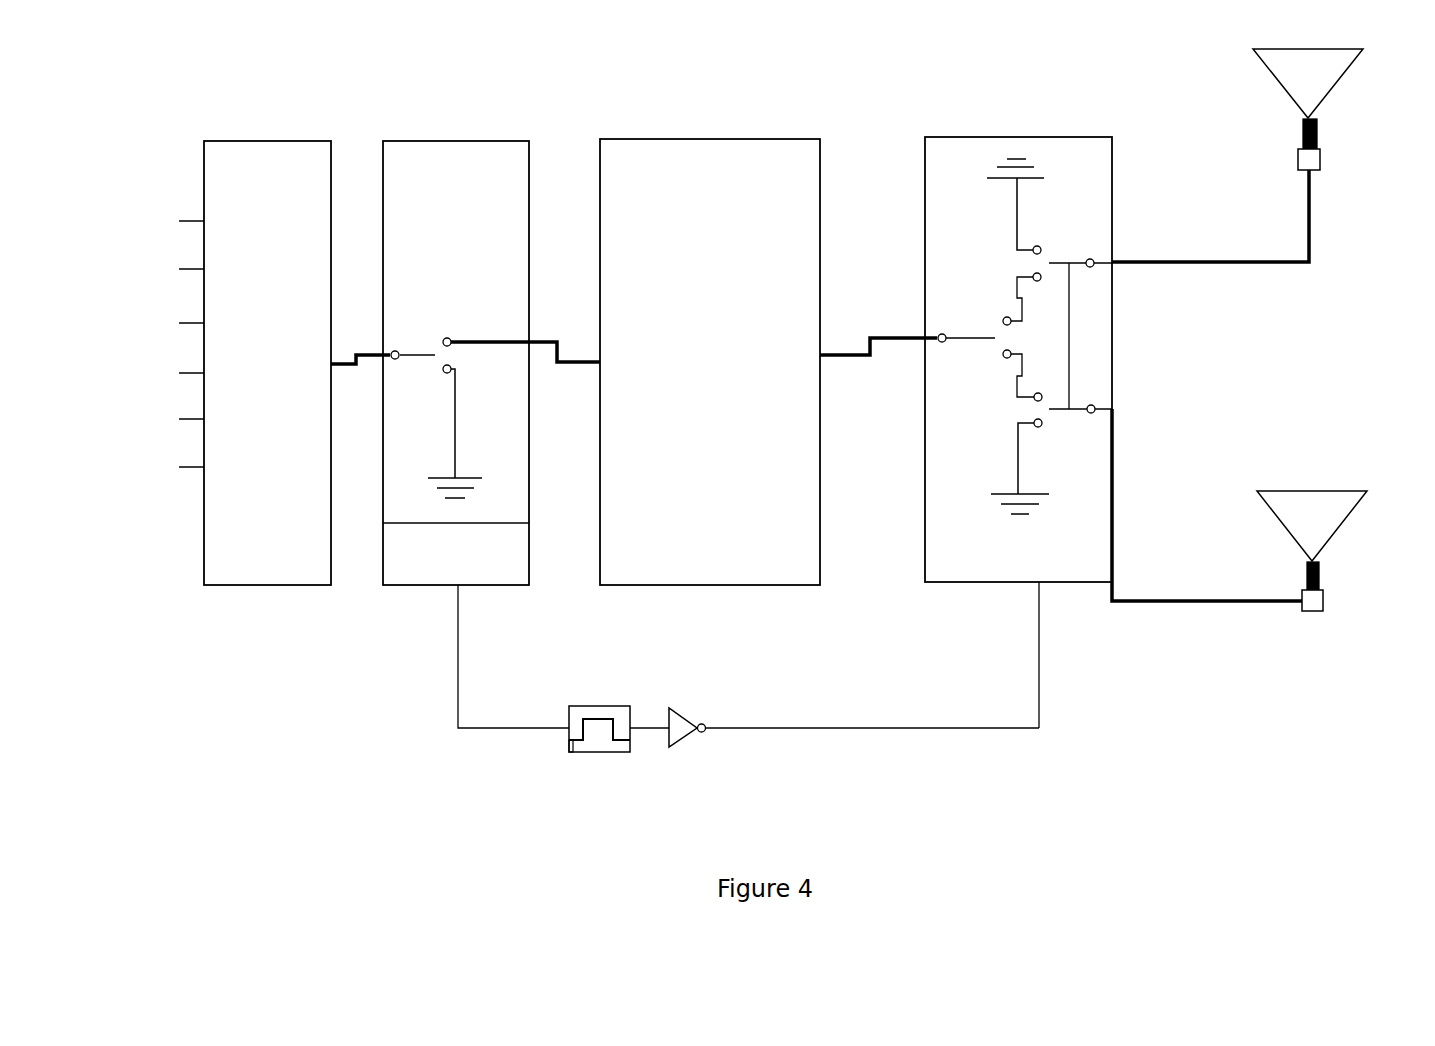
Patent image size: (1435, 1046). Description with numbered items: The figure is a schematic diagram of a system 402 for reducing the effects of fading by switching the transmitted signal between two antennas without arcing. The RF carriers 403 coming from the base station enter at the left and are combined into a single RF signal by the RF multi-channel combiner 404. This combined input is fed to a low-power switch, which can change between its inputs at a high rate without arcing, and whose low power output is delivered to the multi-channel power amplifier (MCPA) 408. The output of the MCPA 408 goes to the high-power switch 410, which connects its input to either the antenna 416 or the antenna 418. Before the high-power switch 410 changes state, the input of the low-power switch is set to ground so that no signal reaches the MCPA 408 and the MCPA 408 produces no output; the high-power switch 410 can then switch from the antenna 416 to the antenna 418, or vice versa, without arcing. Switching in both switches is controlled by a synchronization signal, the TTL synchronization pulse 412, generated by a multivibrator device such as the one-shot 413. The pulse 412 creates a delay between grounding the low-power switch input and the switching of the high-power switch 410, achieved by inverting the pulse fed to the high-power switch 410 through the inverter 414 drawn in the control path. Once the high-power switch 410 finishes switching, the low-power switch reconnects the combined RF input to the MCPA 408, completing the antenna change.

The system 402 is at (378, 704).
The RF carriers 403 is at (148, 474).
The RF multi-channel combiner 404 is at (267, 363).
The multi-channel power amplifier (MCPA) 408 is at (710, 362).
The high-power switch 410 is at (1041, 137).
The TTL synchronization pulse 412 is at (573, 747).
The one-shot 413 is at (607, 706).
The inverter 414 is at (664, 737).
The antenna 416 is at (1333, 90).
The antenna 418 is at (1340, 528).